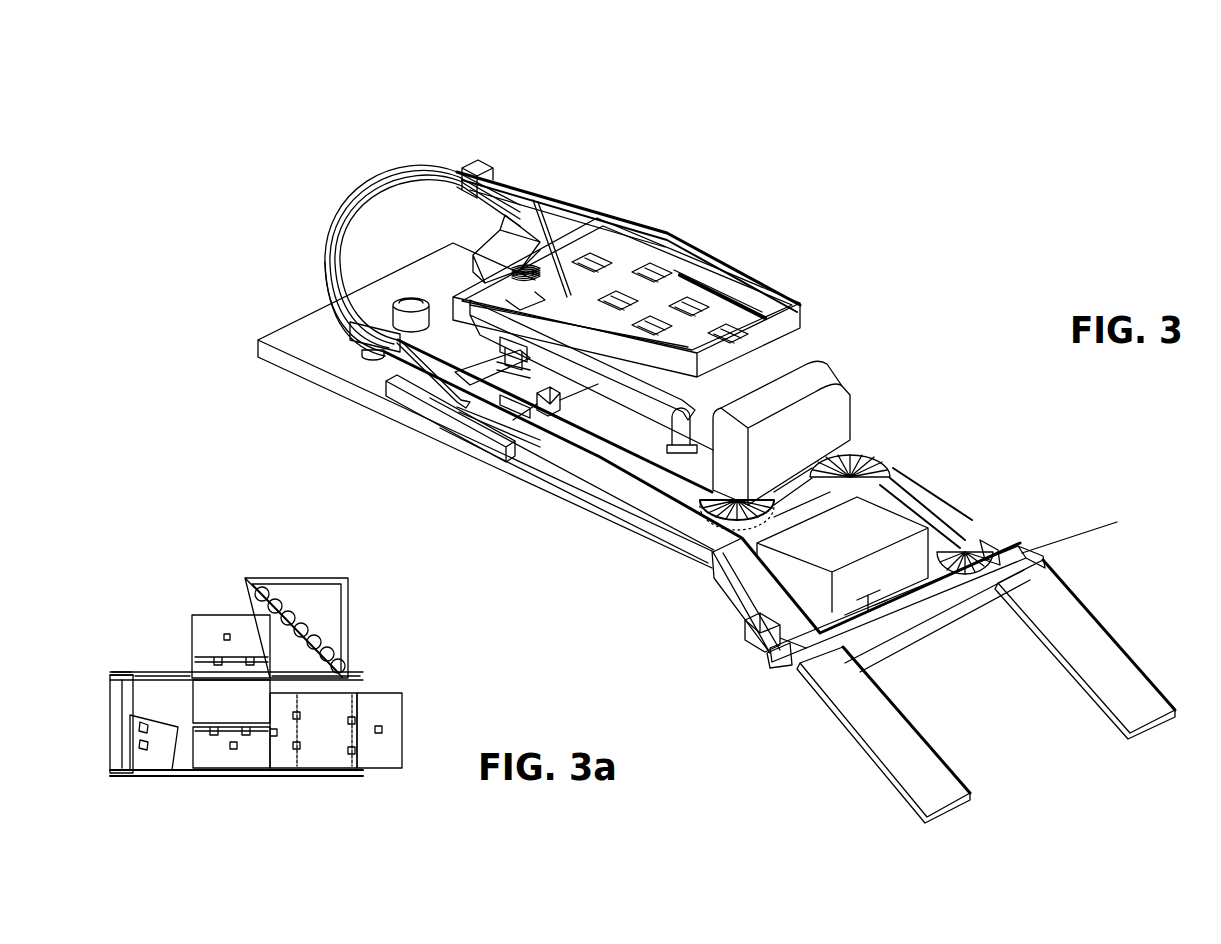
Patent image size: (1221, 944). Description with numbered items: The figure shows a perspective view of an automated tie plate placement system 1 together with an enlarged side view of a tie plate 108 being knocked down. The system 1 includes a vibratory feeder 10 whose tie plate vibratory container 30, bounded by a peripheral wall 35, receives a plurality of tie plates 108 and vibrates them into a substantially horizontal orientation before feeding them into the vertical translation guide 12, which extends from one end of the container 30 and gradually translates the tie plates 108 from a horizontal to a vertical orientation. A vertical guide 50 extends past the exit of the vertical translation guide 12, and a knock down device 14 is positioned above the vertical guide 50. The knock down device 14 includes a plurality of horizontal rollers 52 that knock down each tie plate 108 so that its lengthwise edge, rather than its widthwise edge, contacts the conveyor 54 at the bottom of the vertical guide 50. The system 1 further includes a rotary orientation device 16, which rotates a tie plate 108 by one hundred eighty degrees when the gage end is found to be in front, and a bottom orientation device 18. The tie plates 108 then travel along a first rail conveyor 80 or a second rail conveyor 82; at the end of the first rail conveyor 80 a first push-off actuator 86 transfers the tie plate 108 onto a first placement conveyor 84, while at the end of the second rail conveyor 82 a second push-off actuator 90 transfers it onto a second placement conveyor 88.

In FIG. 3, the automated tie plate placement system 1 is at (1020, 175).
In FIG. 3, the vibratory feeder 10 is at (683, 178).
In FIG. 3, the vertical translation guide 12 is at (597, 213).
In FIG. 3, the knock down device 14 is at (462, 163).
In FIG. 3a, the knock down device 14 is at (343, 605).
In FIG. 3, the rotary orientation device 16 is at (363, 355).
In FIG. 3, the bottom orientation device 18 is at (425, 386).
In FIG. 3, the tie plate vibratory container 30 is at (793, 302).
In FIG. 3, the peripheral wall 35 is at (700, 267).
In FIG. 3, the vertical guide 50 is at (362, 210).
In FIG. 3a, the vertical guide 50 is at (360, 675).
In FIG. 3a, the horizontal rollers 52 is at (283, 600).
In FIG. 3a, the conveyor 54 is at (238, 773).
In FIG. 3, the first rail conveyor 80 is at (622, 490).
In FIG. 3, the second rail conveyor 82 is at (677, 485).
In FIG. 3, the first placement conveyor 84 is at (1112, 675).
In FIG. 3, the first push-off actuator 86 is at (990, 547).
In FIG. 3, the second placement conveyor 88 is at (892, 745).
In FIG. 3, the second push-off actuator 90 is at (760, 640).
In FIG. 3, the tie plate 108 is at (703, 303).
In FIG. 3a, the tie plate 108 is at (205, 622).